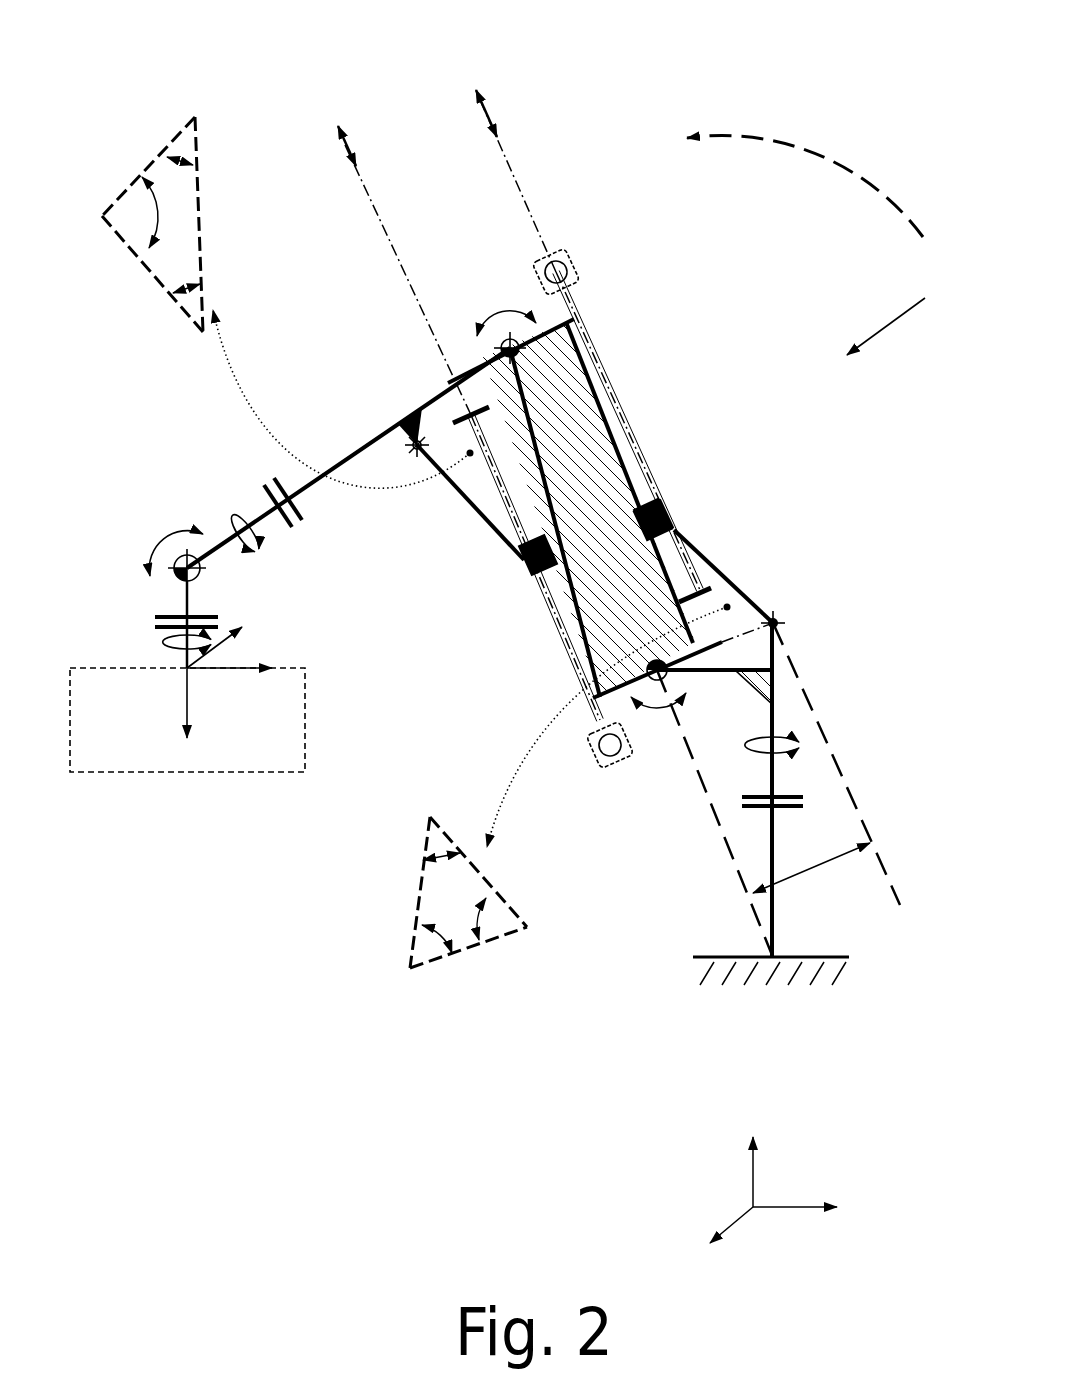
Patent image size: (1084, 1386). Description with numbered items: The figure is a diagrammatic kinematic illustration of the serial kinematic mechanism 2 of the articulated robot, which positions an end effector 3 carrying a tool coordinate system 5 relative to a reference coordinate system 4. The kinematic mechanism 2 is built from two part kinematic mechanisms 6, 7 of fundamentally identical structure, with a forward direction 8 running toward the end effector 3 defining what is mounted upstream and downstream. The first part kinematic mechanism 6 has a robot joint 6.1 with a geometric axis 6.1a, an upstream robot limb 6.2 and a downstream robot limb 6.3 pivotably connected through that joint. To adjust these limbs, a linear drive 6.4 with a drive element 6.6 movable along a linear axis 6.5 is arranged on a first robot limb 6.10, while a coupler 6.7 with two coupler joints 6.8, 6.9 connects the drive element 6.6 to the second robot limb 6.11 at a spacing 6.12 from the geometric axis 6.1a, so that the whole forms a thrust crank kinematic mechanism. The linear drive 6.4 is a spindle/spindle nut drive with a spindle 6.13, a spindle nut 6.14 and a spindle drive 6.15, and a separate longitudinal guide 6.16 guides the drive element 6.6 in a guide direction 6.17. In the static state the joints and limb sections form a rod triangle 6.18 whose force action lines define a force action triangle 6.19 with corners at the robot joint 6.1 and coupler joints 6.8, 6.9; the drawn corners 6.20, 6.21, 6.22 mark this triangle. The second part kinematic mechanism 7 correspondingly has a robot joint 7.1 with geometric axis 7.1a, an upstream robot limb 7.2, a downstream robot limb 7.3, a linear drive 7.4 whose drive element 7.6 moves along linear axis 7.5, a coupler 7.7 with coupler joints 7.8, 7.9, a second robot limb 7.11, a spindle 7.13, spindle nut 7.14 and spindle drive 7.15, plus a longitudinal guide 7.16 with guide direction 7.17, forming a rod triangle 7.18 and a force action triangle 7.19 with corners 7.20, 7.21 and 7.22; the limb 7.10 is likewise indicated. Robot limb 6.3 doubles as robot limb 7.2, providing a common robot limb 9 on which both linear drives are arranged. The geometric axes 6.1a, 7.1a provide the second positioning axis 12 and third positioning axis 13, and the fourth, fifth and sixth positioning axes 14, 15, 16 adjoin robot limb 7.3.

The serial kinematic mechanism 2 is at (899, 310).
The end effector 3 is at (237, 748).
The reference coordinate system 4 is at (705, 1192).
The tool coordinate system 5 is at (140, 736).
The part kinematic mechanism 6 is at (797, 307).
The second part kinematic mechanism 7 is at (400, 648).
The forward direction 8 is at (797, 147).
The common robot limb 9 is at (532, 352).
The second positioning axis 12 is at (663, 685).
The third positioning axis 13 is at (495, 352).
The fourth positioning axis 14 is at (257, 482).
The fifth positioning axis 15 is at (153, 540).
The sixth positioning axis 16 is at (145, 624).
The robot joint 6.1 is at (677, 678).
The geometric axis 6.1a is at (672, 812).
The robot limb 6.2 is at (849, 790).
The robot limb 6.3 is at (440, 189).
The linear drive 6.4 is at (688, 468).
The linear axis 6.5 is at (519, 182).
The drive element 6.6 is at (642, 494).
The coupler 6.7 is at (725, 590).
The coupler joint 6.8 is at (690, 473).
The coupler joint 6.9 is at (785, 625).
The first robot limb 6.10 is at (440, 189).
The second robot limb 6.11 is at (777, 777).
The spacing 6.12 is at (830, 860).
The spindle 6.13 is at (587, 327).
The spindle nut 6.14 is at (682, 516).
The spindle drive 6.15 is at (572, 268).
The longitudinal guide 6.16 is at (573, 470).
The guide direction 6.17 is at (490, 122).
The rod triangle 6.18 is at (753, 578).
The force action triangle 6.19 is at (403, 905).
The triangle side 6.20 is at (410, 968).
The triangle side 6.21 is at (430, 815).
The triangle side 6.22 is at (527, 927).
The robot joint 7.1 is at (500, 322).
The geometric axis 7.1a is at (394, 218).
The robot limb 7.2 is at (626, 483).
The robot limb 7.3 is at (321, 360).
The linear drive 7.4 is at (480, 573).
The linear axis 7.5 is at (398, 267).
The drive element 7.6 is at (527, 588).
The coupler 7.7 is at (412, 428).
The coupler joint 7.8 is at (527, 580).
The coupler joint 7.9 is at (400, 442).
The plate 7.10 is at (590, 430).
The second robot limb 7.11 is at (321, 360).
The spindle 7.13 is at (493, 480).
The spindle nut 7.14 is at (476, 558).
The spindle drive 7.15 is at (605, 768).
The longitudinal guide 7.16 is at (550, 588).
The guide direction 7.17 is at (338, 150).
The rod triangle 7.18 is at (440, 490).
The force action triangle 7.19 is at (128, 143).
The corner 7.20 is at (195, 117).
The corner 7.21 is at (203, 332).
The corner 7.22 is at (101, 217).